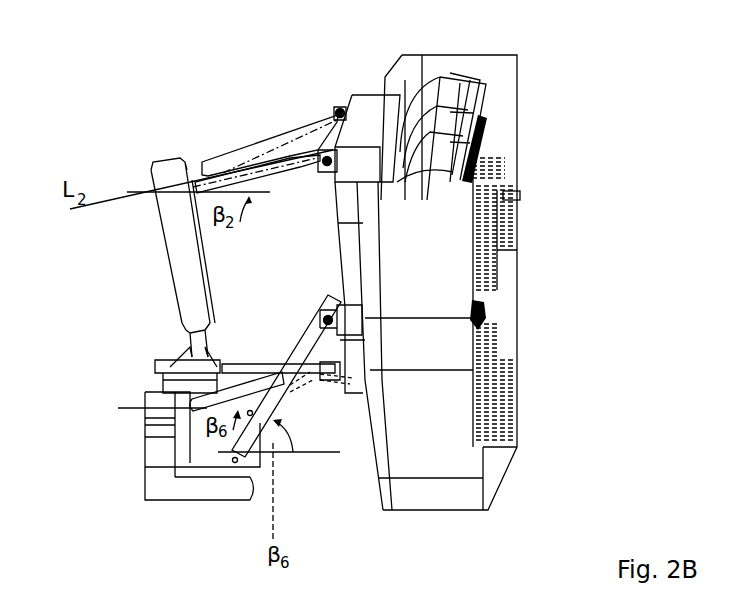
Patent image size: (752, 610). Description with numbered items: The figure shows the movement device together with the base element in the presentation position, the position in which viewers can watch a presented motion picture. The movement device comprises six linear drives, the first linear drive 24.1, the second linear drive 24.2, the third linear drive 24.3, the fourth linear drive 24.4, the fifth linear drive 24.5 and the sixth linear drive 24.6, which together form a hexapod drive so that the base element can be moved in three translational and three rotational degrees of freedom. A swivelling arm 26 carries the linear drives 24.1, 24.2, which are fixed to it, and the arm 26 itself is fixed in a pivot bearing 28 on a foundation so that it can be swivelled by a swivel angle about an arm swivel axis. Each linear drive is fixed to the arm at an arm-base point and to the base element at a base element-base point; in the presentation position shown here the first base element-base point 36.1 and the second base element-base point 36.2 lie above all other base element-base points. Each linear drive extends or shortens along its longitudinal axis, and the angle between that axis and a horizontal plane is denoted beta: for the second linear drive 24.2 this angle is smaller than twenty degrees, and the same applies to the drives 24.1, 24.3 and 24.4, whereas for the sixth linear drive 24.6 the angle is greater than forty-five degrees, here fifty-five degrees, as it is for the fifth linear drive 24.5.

The first linear drive 24.1 is at (255, 152).
The second linear drive 24.2 is at (264, 180).
The third linear drive 24.3 is at (247, 368).
The fourth linear drive 24.4 is at (203, 403).
The fifth linear drive 24.5 is at (302, 330).
The sixth linear drive 24.6 is at (282, 395).
The swivelling arm 26 is at (177, 253).
The pivot bearing 28 is at (173, 360).
The first base element-base point 36.1 is at (340, 108).
The second base element-base point 36.2 is at (322, 153).